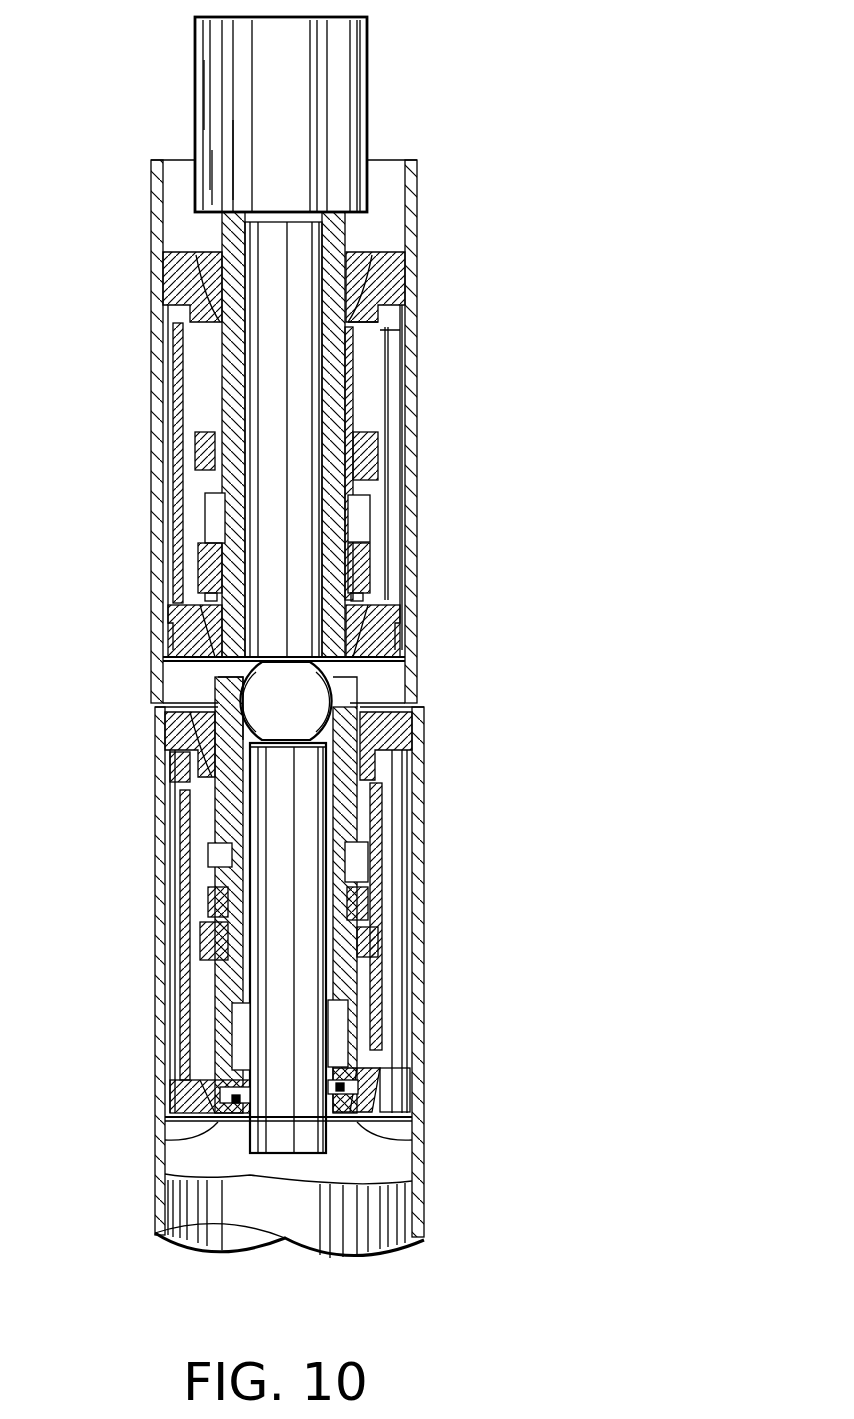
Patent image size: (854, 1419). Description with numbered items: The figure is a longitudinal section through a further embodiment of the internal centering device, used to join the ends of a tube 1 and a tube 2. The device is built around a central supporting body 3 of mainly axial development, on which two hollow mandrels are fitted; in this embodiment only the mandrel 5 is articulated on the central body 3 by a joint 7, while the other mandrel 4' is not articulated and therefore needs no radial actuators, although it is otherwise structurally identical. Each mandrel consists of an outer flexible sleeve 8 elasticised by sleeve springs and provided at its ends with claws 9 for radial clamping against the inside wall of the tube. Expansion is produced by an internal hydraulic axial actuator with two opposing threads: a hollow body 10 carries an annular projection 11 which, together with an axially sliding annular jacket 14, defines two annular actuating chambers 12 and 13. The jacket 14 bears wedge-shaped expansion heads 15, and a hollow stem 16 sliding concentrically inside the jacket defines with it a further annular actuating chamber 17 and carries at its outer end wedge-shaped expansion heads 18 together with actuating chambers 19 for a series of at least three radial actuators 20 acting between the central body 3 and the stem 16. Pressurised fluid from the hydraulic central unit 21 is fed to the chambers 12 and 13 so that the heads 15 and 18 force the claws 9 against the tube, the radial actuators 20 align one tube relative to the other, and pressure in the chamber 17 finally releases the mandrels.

The tube 1 is at (417, 448).
The tube 2 is at (168, 950).
The central supporting body 3 is at (258, 490).
The hollow mandrel 4' is at (234, 477).
The hollow mandrel 5 is at (408, 975).
The joint 7 is at (325, 690).
The outer flexible sleeve 8 is at (178, 330).
The claw 9 is at (175, 270).
The hollow body 10 is at (345, 415).
The annular projection 11 is at (173, 583).
The annular actuating chamber 12 is at (205, 598).
The annular actuating chamber 13 is at (205, 555).
The annular jacket 14 is at (212, 515).
The wedge-shaped expansion head 15 is at (380, 288).
The hollow stem 16 is at (395, 332).
The annular actuating chamber 17 is at (200, 458).
The wedge-shaped expansion head 18 is at (210, 1087).
The actuating chamber 19 is at (222, 1068).
The radial actuator 20 is at (165, 1142).
The hydraulic central unit 21 is at (350, 118).